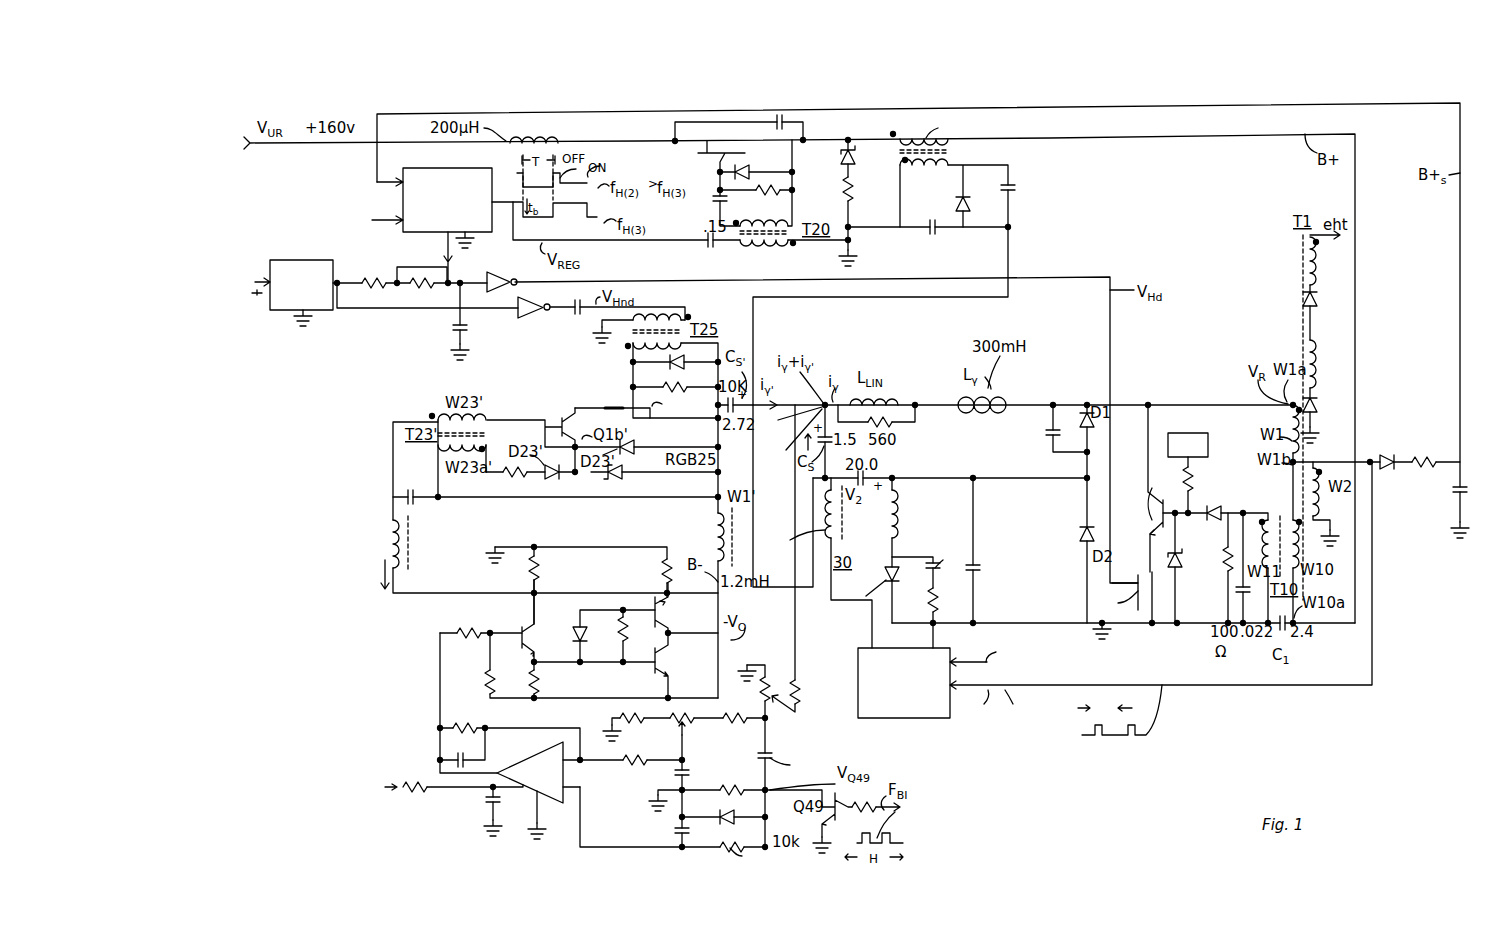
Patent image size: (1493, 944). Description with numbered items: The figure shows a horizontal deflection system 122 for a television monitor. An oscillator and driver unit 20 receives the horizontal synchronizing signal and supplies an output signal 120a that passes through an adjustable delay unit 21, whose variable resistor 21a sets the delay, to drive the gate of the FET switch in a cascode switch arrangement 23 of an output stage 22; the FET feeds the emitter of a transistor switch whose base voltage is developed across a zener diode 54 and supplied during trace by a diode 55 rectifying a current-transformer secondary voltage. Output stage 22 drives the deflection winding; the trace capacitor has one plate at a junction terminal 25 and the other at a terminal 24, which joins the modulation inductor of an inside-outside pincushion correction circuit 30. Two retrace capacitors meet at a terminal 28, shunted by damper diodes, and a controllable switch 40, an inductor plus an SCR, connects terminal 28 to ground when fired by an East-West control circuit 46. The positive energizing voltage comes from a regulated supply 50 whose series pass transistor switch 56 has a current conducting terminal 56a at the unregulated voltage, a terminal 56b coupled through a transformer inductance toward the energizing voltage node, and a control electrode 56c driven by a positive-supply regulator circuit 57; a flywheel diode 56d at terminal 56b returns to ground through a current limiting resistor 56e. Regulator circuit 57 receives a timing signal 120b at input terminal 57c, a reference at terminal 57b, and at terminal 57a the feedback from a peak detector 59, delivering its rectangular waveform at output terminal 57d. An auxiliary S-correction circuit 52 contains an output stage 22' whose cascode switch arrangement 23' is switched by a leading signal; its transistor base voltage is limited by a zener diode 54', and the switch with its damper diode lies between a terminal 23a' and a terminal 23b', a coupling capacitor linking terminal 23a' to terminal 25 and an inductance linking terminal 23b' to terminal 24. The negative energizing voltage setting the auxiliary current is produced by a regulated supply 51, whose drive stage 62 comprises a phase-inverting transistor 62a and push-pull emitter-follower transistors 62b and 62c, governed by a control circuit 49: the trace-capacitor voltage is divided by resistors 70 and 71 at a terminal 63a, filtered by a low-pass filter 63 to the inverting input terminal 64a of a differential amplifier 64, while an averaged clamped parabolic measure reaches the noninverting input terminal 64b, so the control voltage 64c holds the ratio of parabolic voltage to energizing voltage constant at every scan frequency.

The oscillator and driver unit 20 is at (315, 260).
The output signal 120a is at (338, 282).
The timing signal 120b is at (470, 312).
The adjustable delay unit 21 is at (441, 266).
The variable resistor 21a is at (423, 286).
The B+ regulator circuit 57 is at (455, 168).
The terminal 57a is at (403, 180).
The terminal 57b is at (394, 224).
The input terminal 57c is at (436, 257).
The output terminal 57d is at (483, 248).
The series pass transistor switch 56 is at (696, 153).
The current conducting terminal 56a is at (672, 136).
The terminal 56b is at (794, 143).
The control electrode 56c is at (716, 162).
The flywheel diode 56d is at (855, 158).
The current limiting resistor 56e is at (841, 188).
The regulated supply 50 is at (909, 350).
The cascode switch arrangement 23' is at (624, 412).
The zener diode 54' is at (619, 491).
The terminal 23a' is at (737, 475).
The terminal 23b' is at (534, 488).
The auxiliary S-correction circuit 52 is at (527, 507).
The output stage 22' is at (563, 581).
The junction terminal 25 is at (794, 435).
The terminal 24 is at (830, 494).
The inside-outside pincushion correction circuit 30 is at (1086, 376).
The controllable switch 40 is at (919, 563).
The terminal 28 is at (1064, 436).
The output stage 22 is at (1192, 488).
The cascode switch arrangement 23 is at (1137, 591).
The zener diode 54 is at (1199, 568).
The diode 55 is at (1230, 508).
The peak detector 59 is at (1424, 496).
The regulated supply 51 is at (562, 703).
The drive stage 62 is at (592, 653).
The transistor 62a is at (502, 623).
The transistor 62b is at (648, 660).
The transistor 62c is at (668, 617).
The differential amplifier 64 is at (541, 755).
The inverting input terminal 64a is at (570, 738).
The noninverting input terminal 64b is at (579, 810).
The control voltage 64c is at (440, 728).
The control circuit 49 is at (677, 802).
The low-pass filter 63 is at (686, 725).
The terminal 63a is at (766, 732).
The resistor 70 is at (800, 702).
The resistor 71 is at (768, 693).
The East-West control circuit 46 is at (858, 657).
The horizontal deflection system 122 is at (1120, 734).